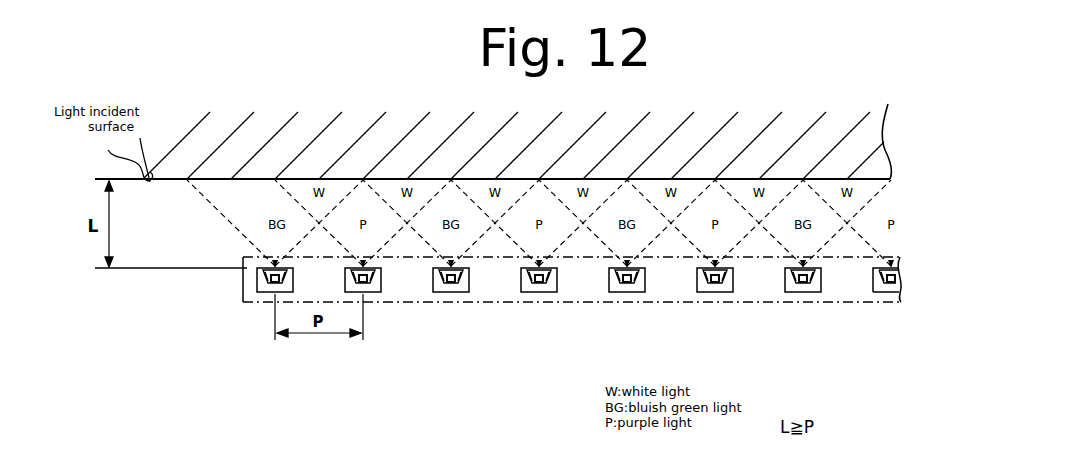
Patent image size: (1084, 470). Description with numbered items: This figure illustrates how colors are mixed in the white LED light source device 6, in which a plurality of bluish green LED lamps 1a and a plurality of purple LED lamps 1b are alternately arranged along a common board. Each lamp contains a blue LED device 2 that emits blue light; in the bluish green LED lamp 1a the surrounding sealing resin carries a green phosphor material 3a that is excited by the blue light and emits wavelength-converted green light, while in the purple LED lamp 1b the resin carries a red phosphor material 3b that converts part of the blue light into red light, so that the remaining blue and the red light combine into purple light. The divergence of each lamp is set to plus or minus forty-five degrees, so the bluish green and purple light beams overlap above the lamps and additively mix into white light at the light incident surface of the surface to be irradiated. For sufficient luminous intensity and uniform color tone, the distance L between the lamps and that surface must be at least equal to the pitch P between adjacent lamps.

The bluish green LED lamp 1a is at (800, 292).
The purple LED lamp 1b is at (361, 292).
The blue LED device 2 is at (918, 313).
The green phosphor material 3a is at (837, 277).
The red phosphor material 3b is at (376, 273).
The white LED light source device 6 is at (900, 256).